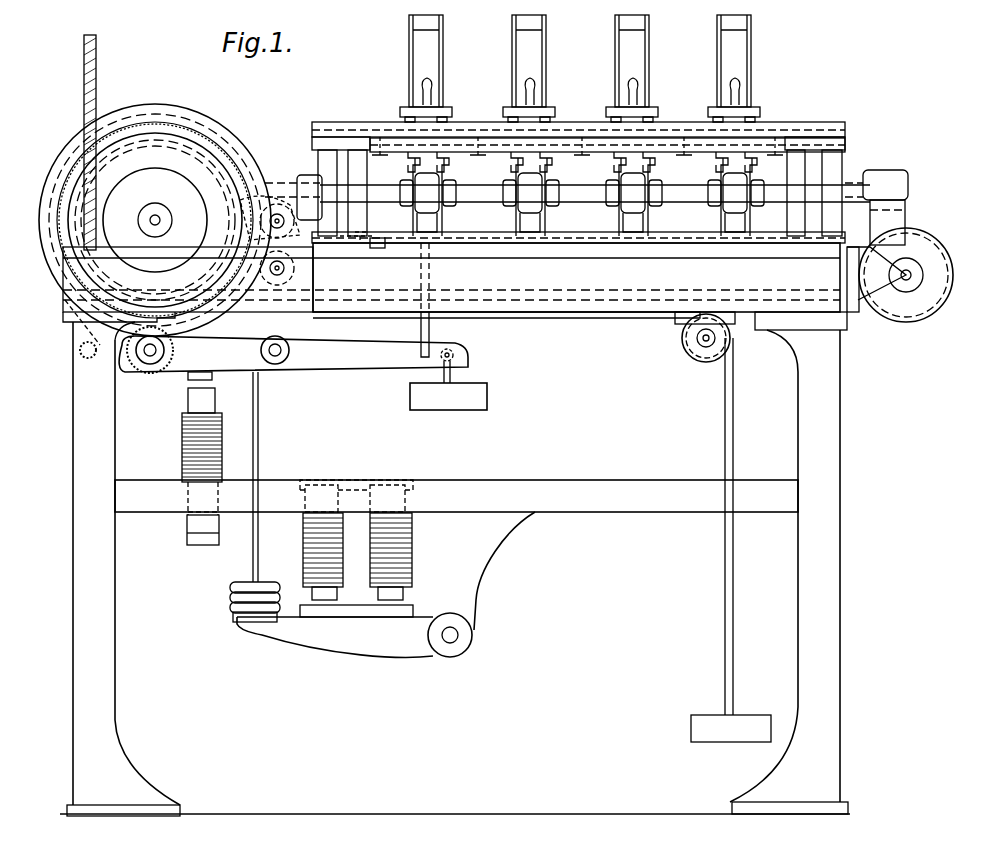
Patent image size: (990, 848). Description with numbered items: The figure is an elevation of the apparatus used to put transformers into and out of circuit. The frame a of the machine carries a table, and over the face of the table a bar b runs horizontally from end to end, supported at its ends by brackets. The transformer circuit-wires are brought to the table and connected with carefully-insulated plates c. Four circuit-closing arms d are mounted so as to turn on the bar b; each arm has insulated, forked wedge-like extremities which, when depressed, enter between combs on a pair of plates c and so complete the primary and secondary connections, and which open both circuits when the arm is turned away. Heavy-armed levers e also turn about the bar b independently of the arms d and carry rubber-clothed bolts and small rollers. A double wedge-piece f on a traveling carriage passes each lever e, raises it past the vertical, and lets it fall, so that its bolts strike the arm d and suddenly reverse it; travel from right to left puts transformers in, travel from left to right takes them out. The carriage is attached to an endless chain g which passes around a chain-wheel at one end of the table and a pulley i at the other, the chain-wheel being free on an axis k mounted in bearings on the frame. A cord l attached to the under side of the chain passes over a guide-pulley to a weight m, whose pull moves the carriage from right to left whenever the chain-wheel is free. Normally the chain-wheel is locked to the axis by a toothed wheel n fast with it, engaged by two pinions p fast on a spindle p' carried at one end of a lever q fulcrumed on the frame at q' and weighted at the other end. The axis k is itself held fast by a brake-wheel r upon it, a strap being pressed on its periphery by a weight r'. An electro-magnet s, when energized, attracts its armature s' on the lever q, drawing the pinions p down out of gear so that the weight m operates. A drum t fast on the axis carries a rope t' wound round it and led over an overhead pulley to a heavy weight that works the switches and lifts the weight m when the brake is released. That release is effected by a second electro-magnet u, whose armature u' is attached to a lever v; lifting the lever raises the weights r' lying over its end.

The frame a is at (455, 469).
The bar b is at (595, 184).
The insulated plates c is at (748, 150).
The circuit-closing arms d is at (582, 202).
The heavy-armed levers e is at (580, 68).
The double wedge-piece f is at (362, 228).
The endless chain g is at (874, 269).
The pulley i is at (910, 275).
The axis k is at (160, 220).
The cord l is at (711, 514).
The weight m is at (731, 717).
The toothed wheel n is at (202, 253).
The pinions p is at (150, 357).
The spindle p' is at (107, 345).
The lever q is at (293, 307).
The fulcrum q' is at (276, 368).
The brake-wheel r is at (155, 217).
The weight r' is at (257, 497).
The electro-magnet s is at (193, 466).
The armature s' is at (215, 381).
The drum t is at (155, 220).
The rope t' is at (101, 142).
The electro-magnet u is at (356, 540).
The armature u' is at (356, 605).
The lever v is at (354, 635).